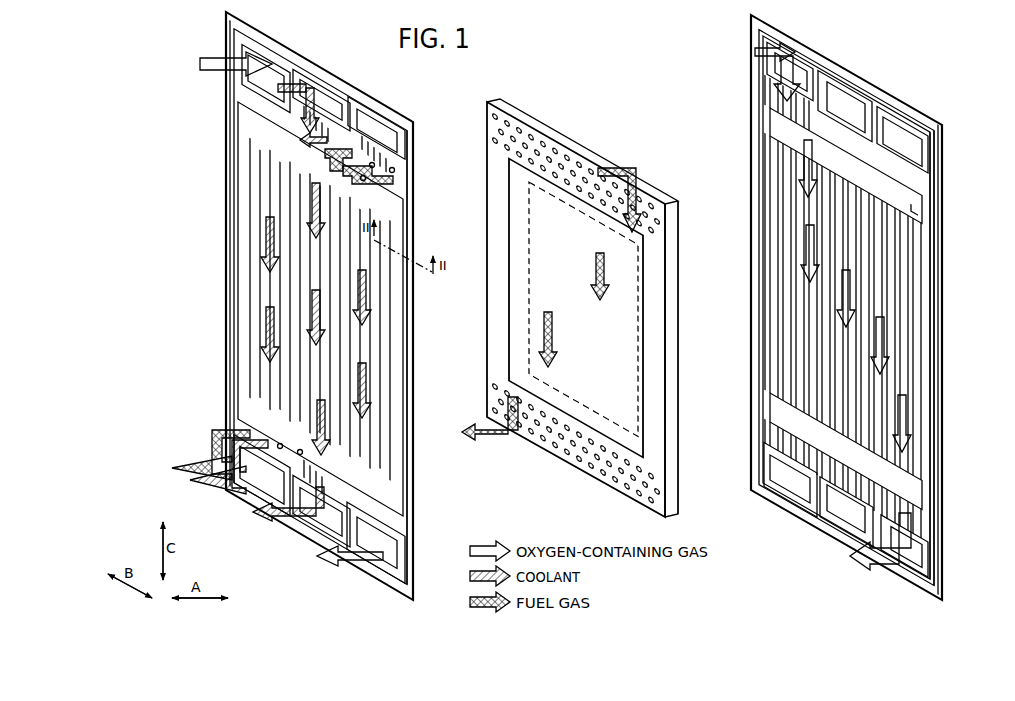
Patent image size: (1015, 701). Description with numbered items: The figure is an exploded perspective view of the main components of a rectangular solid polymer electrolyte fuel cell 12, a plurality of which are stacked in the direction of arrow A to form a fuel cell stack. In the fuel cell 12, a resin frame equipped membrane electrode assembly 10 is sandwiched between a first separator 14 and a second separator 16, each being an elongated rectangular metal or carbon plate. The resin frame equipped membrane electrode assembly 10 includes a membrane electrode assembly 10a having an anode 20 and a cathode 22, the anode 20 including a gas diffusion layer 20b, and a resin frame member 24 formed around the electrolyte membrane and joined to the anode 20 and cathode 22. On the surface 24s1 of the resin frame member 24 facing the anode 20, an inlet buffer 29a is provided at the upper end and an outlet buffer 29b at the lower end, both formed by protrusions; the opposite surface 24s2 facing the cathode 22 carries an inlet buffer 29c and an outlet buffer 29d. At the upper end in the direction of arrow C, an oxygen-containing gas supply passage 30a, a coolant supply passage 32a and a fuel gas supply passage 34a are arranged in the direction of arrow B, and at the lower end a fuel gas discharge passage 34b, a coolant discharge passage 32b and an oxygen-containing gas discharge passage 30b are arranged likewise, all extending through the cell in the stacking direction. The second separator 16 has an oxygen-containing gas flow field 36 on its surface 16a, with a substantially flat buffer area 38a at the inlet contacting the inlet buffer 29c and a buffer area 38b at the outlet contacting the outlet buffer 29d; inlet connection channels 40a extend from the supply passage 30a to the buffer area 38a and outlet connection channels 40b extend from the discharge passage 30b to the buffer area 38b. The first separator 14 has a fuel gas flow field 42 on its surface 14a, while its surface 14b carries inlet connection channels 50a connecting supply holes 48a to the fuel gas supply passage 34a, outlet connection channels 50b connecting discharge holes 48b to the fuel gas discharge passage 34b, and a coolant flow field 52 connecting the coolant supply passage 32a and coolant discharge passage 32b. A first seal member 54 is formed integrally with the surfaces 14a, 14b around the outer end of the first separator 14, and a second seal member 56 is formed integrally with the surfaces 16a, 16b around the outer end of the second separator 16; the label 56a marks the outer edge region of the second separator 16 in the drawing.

The resin frame equipped membrane electrode assembly 10 is at (485, 121).
The membrane electrode assembly 10a is at (515, 203).
The solid polymer electrolyte fuel cell 12 is at (590, 289).
The first separator 14 is at (223, 38).
The surface of first separator 14a is at (413, 496).
The surface of first separator 14b is at (412, 520).
The second separator 16 is at (749, 38).
The surface of second separator 16a is at (938, 458).
The surface of second separator 16b is at (938, 424).
The anode 20 is at (543, 262).
The gas diffusion layer 20b is at (568, 335).
The cathode 22 is at (625, 296).
The resin frame member 24 is at (522, 107).
The surface of resin frame member 24s1 is at (658, 440).
The surface of resin frame member 24s2 is at (655, 408).
The inlet buffer 29a is at (575, 160).
The outlet buffer 29b is at (565, 443).
The inlet buffer 29c is at (548, 128).
The outlet buffer 29d is at (618, 490).
The oxygen-containing gas supply passage 30a is at (279, 70).
The oxygen-containing gas discharge passage 30b is at (377, 543).
The coolant supply passage 32a is at (331, 103).
The coolant discharge passage 32b is at (315, 535).
The fuel gas supply passage 34a is at (383, 130).
The fuel gas discharge passage 34b is at (257, 473).
The oxygen-containing gas flow field 36 is at (905, 372).
The buffer area 38a is at (917, 212).
The buffer area 38b is at (912, 487).
The inlet connection channels 40a is at (785, 100).
The outlet connection channels 40b is at (914, 520).
The fuel gas flow field 42 is at (270, 296).
The supply holes 48a is at (385, 176).
The discharge holes 48b is at (290, 437).
The inlet connection channels 50a is at (392, 180).
The outlet connection channels 50b is at (277, 463).
The coolant flow field 52 is at (254, 327).
The first seal member 54 is at (232, 180).
The second seal member 56 is at (940, 148).
The outer edge of second separator 56a is at (932, 258).